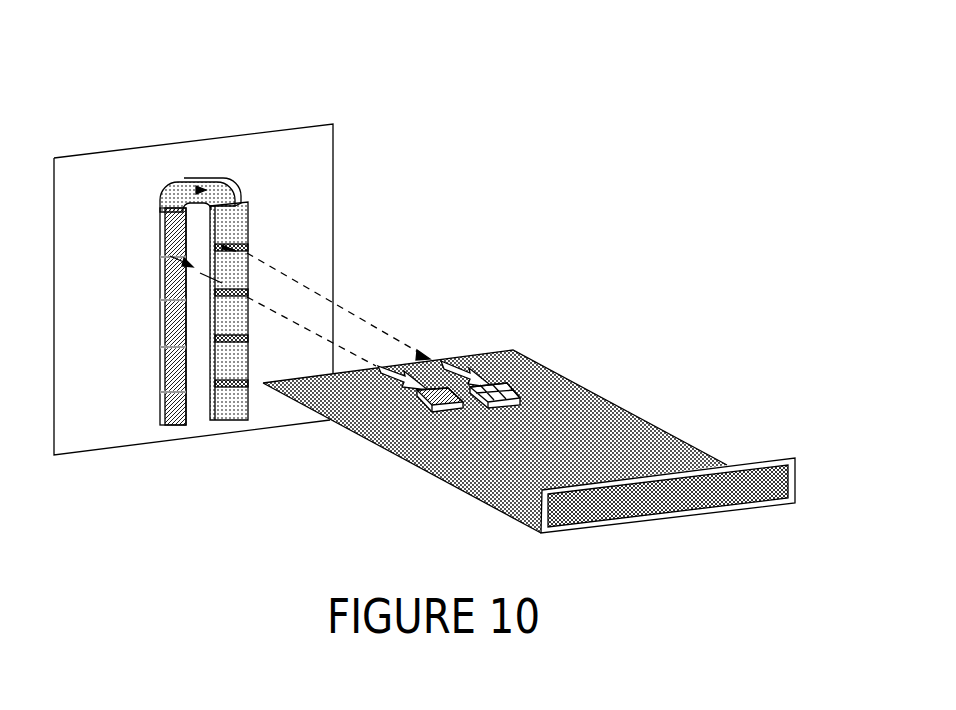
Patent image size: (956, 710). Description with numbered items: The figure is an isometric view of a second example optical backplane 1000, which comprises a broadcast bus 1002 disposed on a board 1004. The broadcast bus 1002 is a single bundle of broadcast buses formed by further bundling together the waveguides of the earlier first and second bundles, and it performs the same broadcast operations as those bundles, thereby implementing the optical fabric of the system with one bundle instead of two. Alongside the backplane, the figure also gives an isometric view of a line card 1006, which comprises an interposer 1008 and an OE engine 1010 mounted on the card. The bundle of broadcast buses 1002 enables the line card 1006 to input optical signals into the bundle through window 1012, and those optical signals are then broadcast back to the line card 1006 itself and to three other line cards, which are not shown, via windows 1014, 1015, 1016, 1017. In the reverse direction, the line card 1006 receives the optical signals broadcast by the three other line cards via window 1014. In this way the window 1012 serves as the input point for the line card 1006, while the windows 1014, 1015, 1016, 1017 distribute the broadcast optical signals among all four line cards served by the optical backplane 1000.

The optical backplane 1000 is at (329, 75).
The broadcast bus 1002 is at (232, 175).
The board 1004 is at (318, 163).
The line card 1006 is at (648, 395).
The interposer 1008 is at (438, 387).
The OE engine 1010 is at (493, 380).
The window 1012 is at (160, 252).
The window 1014 is at (240, 250).
The window 1015 is at (247, 292).
The window 1016 is at (245, 338).
The window 1017 is at (247, 387).